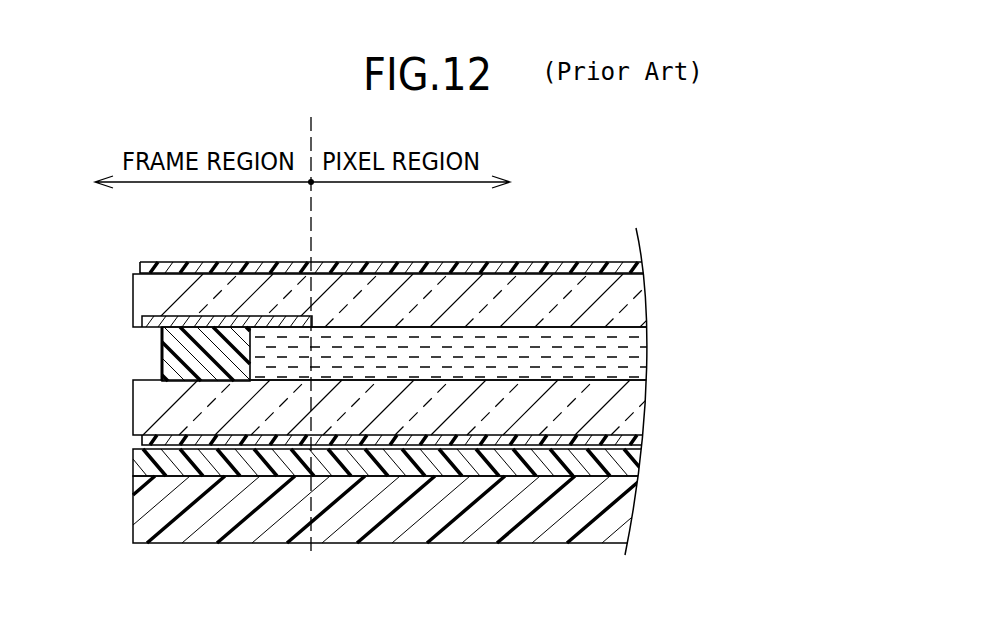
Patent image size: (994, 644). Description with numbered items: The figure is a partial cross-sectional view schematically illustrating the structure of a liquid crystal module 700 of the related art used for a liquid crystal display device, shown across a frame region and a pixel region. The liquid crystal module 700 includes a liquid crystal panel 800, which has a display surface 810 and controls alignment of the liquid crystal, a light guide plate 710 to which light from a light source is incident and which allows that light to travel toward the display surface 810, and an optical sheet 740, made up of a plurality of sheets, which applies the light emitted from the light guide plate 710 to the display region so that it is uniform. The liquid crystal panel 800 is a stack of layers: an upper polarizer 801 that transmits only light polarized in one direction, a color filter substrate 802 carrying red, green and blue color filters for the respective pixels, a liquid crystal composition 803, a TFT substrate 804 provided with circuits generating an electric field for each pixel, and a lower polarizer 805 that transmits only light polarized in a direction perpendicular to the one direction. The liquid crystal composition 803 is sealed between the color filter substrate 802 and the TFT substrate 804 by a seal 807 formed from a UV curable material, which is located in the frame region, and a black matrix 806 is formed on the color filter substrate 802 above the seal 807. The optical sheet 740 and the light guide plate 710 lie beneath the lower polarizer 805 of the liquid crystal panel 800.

The liquid crystal module 700 is at (563, 159).
The light guide plate 710 is at (630, 518).
The optical sheet 740 is at (633, 463).
The liquid crystal panel 800 is at (773, 262).
The upper polarizer 801 is at (636, 267).
The color filter substrate 802 is at (630, 297).
The liquid crystal composition 803 is at (636, 350).
The TFT substrate 804 is at (638, 400).
The lower polarizer 805 is at (633, 437).
The black matrix 806 is at (153, 325).
The seal 807 is at (163, 363).
The display surface 810 is at (537, 262).